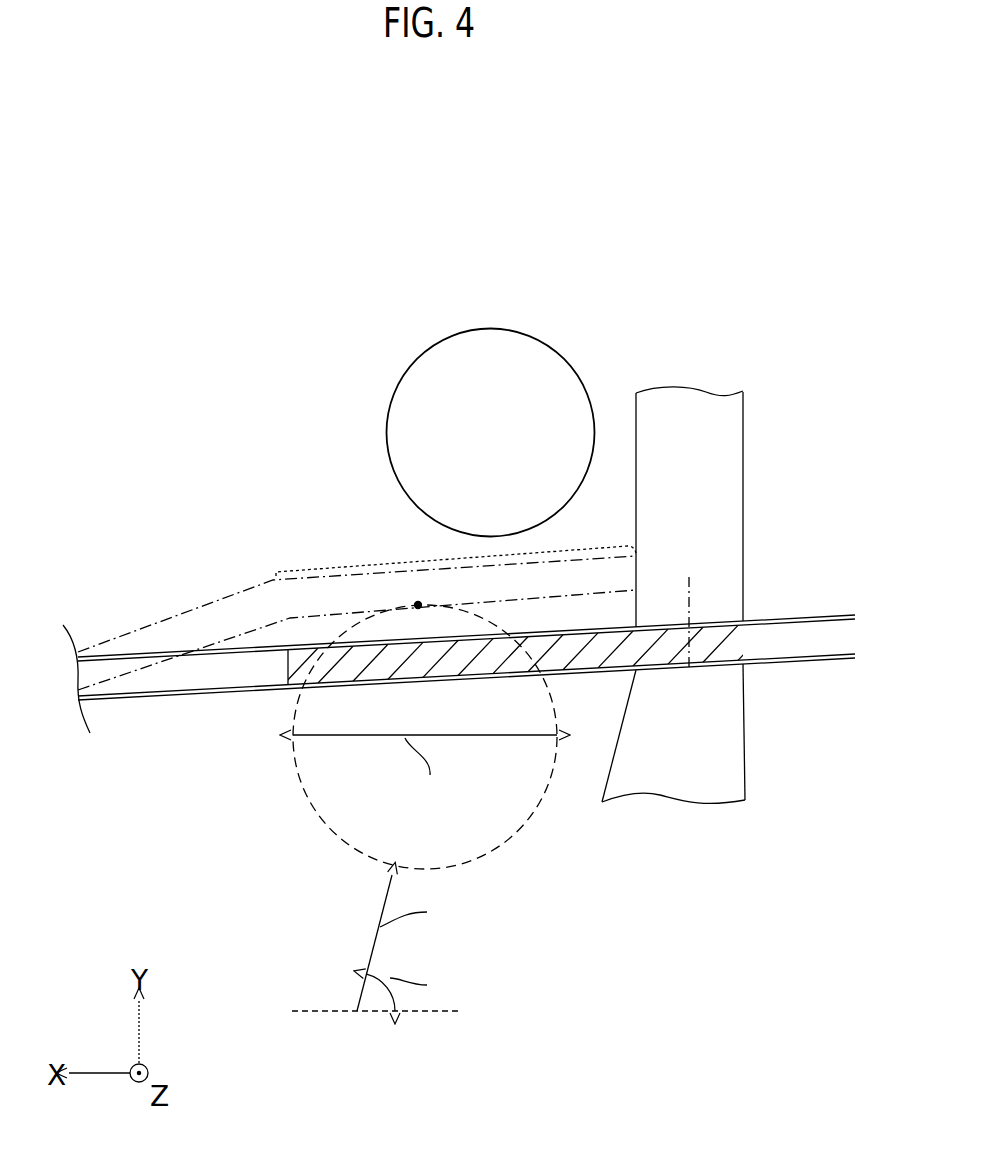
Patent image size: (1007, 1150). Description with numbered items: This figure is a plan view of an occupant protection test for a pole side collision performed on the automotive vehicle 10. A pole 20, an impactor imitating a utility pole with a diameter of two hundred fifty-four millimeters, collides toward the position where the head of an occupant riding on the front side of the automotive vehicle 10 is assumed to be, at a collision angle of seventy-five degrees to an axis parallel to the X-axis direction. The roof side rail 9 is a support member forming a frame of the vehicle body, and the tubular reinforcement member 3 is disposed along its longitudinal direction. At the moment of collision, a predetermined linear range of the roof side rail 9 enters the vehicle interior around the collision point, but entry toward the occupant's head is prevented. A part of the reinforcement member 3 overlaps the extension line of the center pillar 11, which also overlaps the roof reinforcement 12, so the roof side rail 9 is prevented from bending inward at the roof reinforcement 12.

The automotive vehicle 10 is at (97, 386).
The roof side rail 9 is at (239, 594).
The reinforcement member 3 is at (394, 684).
The roof reinforcement 12 is at (747, 453).
The center pillar 11 is at (719, 674).
The pole 20 is at (425, 791).